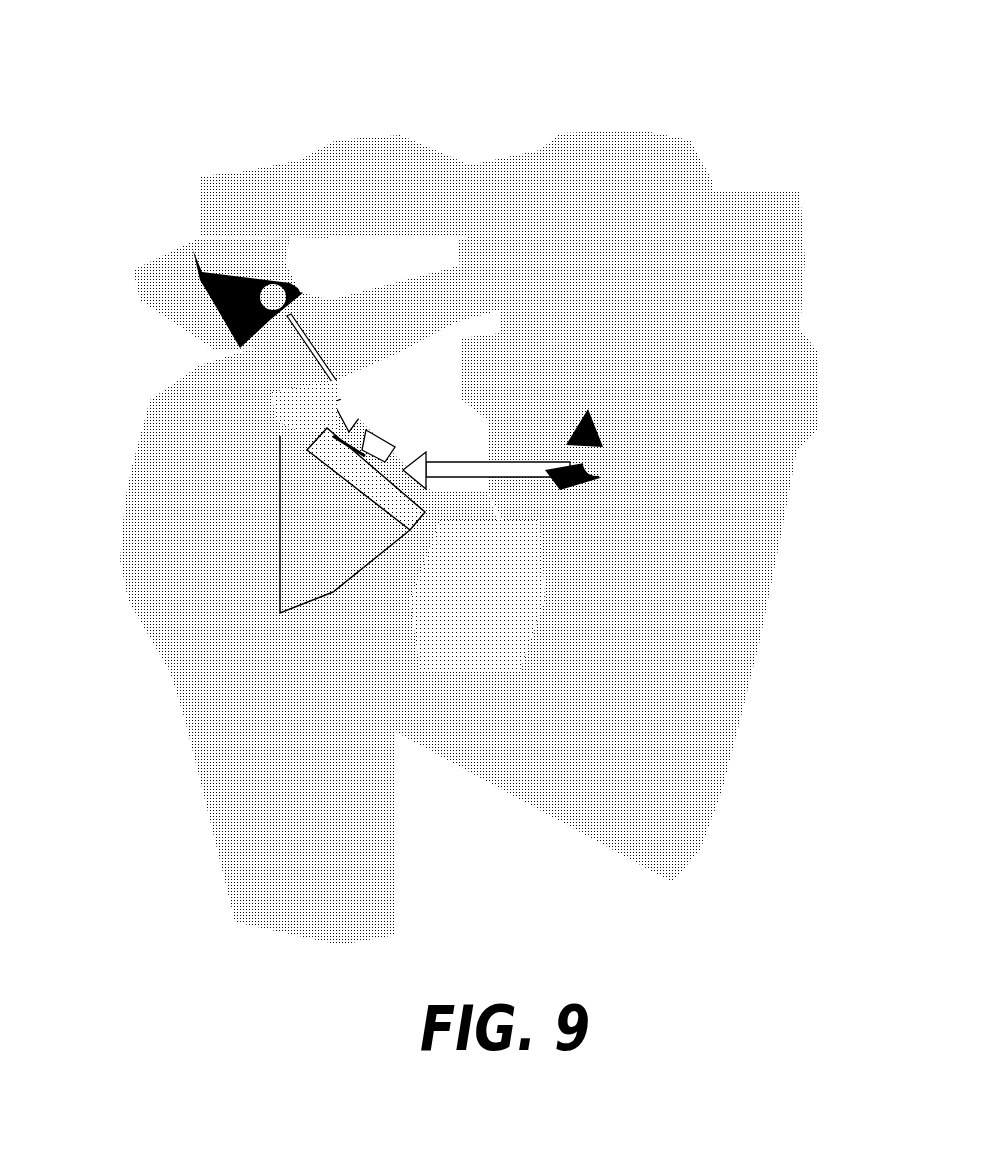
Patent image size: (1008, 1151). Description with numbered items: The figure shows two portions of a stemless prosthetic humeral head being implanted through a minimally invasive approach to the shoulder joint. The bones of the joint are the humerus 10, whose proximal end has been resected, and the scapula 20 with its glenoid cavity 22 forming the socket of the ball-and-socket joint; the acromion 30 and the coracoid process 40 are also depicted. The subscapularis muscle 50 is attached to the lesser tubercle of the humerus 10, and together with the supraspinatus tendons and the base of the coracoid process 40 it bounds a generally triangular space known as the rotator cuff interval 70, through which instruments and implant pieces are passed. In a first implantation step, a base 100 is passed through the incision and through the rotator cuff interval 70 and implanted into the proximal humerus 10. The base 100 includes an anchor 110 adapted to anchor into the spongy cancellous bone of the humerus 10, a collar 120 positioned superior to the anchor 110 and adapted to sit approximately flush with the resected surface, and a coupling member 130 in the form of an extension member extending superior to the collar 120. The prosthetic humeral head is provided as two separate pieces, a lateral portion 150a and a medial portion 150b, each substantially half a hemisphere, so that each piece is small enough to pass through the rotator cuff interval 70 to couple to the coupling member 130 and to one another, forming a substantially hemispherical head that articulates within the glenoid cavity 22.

The humerus 10 is at (190, 645).
The scapula 20 is at (720, 424).
The glenoid cavity 22 is at (487, 381).
The acromion 30 is at (320, 207).
The coracoid process 40 is at (553, 212).
The subscapularis muscle 50 is at (626, 757).
The rotator cuff interval 70 is at (412, 390).
The base 100 is at (268, 463).
The anchor 110 is at (307, 534).
The collar 120 is at (320, 447).
The coupling member 130 is at (327, 430).
The lateral portion 150a is at (182, 273).
The medial portion 150b is at (655, 506).